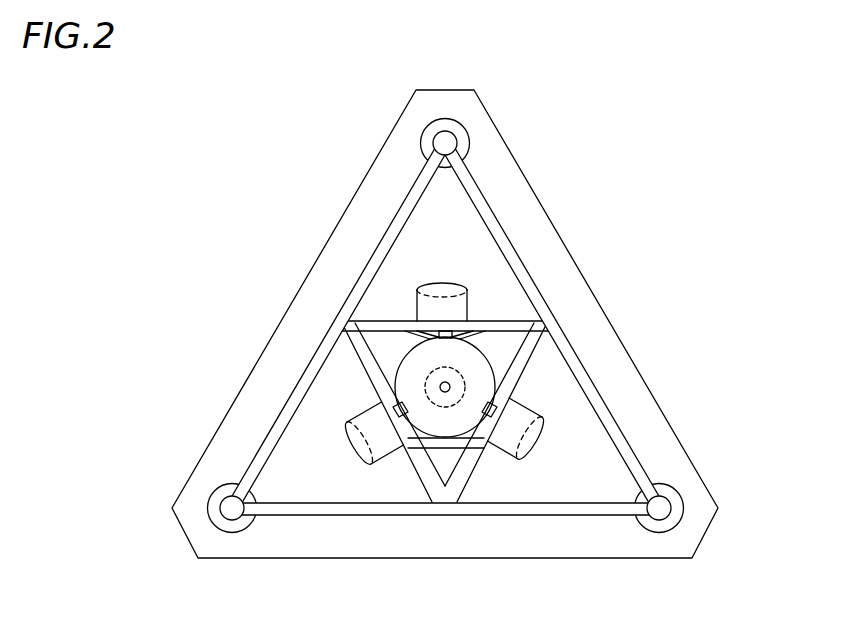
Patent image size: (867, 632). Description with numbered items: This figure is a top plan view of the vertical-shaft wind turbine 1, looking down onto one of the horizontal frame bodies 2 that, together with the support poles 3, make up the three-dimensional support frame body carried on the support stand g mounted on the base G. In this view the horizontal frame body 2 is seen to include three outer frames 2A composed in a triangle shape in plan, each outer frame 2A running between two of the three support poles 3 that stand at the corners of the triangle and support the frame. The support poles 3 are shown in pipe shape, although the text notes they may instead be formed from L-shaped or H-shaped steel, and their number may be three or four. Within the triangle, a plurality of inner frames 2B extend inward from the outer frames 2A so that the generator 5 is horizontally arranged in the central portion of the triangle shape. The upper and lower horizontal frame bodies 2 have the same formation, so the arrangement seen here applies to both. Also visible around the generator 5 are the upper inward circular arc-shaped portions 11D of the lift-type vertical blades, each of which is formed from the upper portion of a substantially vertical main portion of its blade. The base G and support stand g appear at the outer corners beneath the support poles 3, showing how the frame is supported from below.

The vertical-shaft wind turbine 1 is at (443, 347).
The horizontal frame body 2 is at (443, 347).
The outer frame 2A is at (502, 227).
The inner frame 2B is at (370, 320).
The support pole 3 is at (469, 136).
The generator 5 is at (437, 421).
The upper inward circular arc-shaped portion 11D is at (417, 298).
The base G is at (653, 397).
The support stand g is at (420, 138).